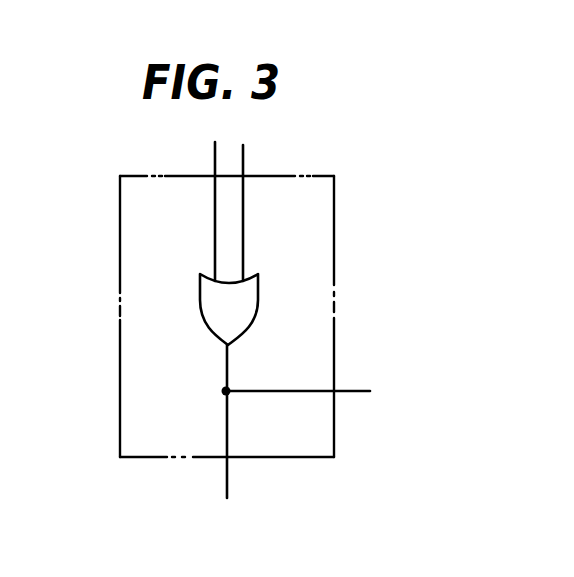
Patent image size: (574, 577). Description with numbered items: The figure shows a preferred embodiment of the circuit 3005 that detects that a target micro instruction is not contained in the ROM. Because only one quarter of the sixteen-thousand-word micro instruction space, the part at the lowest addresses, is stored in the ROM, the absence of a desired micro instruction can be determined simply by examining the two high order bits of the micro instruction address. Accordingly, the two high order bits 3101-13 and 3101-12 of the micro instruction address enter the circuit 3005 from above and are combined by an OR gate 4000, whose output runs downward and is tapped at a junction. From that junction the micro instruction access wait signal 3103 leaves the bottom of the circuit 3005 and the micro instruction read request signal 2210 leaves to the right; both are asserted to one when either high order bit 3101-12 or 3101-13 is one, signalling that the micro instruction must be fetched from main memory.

The high order bit of the micro instruction address 3101-13 is at (213, 162).
The high order bit of the micro instruction address 3101-12 is at (245, 162).
The circuit to detect that the target micro instruction is not contained in the ROM 3005 is at (334, 222).
The OR gate 4000 is at (202, 310).
The micro instruction read request signal 2210 is at (352, 391).
The micro instruction access wait signal 3103 is at (228, 478).